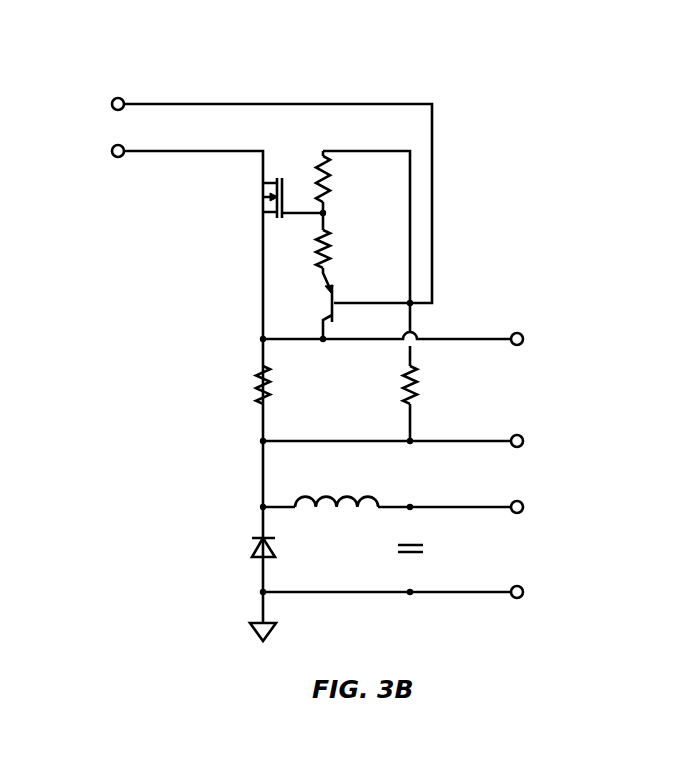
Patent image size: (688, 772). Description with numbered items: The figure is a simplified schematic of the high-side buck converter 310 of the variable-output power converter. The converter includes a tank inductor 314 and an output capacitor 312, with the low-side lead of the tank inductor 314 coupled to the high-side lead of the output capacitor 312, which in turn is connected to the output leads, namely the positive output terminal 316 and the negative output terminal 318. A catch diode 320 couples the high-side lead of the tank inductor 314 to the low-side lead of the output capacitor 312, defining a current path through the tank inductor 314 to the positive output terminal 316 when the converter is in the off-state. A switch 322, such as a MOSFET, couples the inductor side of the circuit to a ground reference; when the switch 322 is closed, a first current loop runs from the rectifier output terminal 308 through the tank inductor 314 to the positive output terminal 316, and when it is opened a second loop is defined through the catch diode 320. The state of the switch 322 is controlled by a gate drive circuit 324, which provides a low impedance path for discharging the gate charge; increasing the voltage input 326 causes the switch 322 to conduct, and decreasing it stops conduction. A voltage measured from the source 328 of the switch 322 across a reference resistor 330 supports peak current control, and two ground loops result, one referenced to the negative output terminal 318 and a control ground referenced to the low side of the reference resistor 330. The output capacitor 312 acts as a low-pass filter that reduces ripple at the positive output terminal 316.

The high-side buck converter 310 is at (163, 58).
The voltage input 326 is at (110, 105).
The rectifier output terminal 308 is at (110, 152).
The switch 322 is at (262, 200).
The gate drive circuit 324 is at (449, 168).
The reference resistor 330 is at (258, 378).
The source 328 is at (524, 340).
The tank inductor 314 is at (326, 492).
The catch diode 320 is at (250, 553).
The output capacitor 312 is at (425, 548).
The positive output terminal 316 is at (524, 508).
The negative output terminal 318 is at (524, 593).